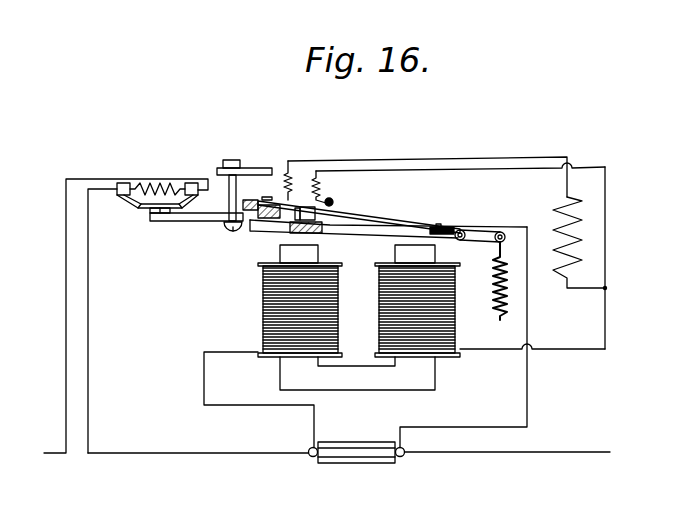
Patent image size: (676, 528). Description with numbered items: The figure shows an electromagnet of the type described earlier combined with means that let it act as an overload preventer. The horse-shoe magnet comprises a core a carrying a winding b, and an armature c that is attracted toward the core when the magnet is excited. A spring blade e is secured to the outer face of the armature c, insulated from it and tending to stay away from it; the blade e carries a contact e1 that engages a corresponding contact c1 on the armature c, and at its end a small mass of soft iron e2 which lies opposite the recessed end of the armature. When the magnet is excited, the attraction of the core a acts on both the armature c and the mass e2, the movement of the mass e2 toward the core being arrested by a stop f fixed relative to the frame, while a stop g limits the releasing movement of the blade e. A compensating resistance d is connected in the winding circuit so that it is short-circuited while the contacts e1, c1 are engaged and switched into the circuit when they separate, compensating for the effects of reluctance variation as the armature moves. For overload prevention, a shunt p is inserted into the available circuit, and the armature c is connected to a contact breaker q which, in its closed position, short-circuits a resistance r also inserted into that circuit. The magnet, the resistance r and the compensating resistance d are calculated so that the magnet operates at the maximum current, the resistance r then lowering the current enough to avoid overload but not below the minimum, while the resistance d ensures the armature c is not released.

The resistance r is at (162, 184).
The contact breaker q is at (163, 208).
The stop f is at (236, 198).
The small mass of soft iron e2 is at (288, 198).
The stop g is at (331, 200).
The contact e1 is at (376, 220).
The spring blade e is at (405, 226).
The contact c1 is at (288, 224).
The armature c is at (441, 227).
The resistance d is at (553, 207).
The winding b is at (378, 324).
The core a is at (353, 372).
The shunt p is at (376, 459).